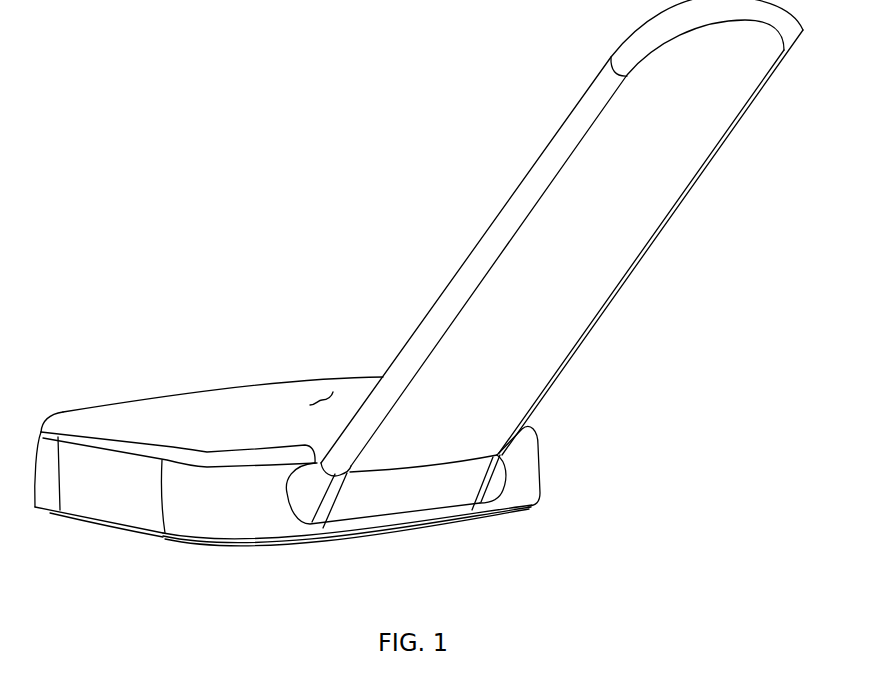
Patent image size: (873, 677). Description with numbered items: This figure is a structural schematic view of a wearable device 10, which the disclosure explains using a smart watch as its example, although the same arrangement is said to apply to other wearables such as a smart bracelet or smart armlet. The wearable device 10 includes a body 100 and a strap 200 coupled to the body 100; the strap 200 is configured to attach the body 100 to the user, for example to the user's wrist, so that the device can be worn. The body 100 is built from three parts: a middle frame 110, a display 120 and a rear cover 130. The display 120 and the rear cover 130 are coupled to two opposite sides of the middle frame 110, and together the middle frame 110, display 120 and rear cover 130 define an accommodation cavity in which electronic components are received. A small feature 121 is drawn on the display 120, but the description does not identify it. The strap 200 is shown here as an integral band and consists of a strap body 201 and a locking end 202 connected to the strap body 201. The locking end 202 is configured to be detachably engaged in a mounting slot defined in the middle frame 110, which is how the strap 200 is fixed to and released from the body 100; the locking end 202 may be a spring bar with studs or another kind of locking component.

The wearable device 10 is at (105, 87).
The body 100 is at (217, 394).
The middle frame 110 is at (200, 502).
The display 120 is at (107, 438).
The notch feature on top surface 121 is at (322, 397).
The rear cover 130 is at (108, 527).
The strap 200 is at (440, 299).
The strap body 201 is at (560, 337).
The locking end 202 is at (403, 480).